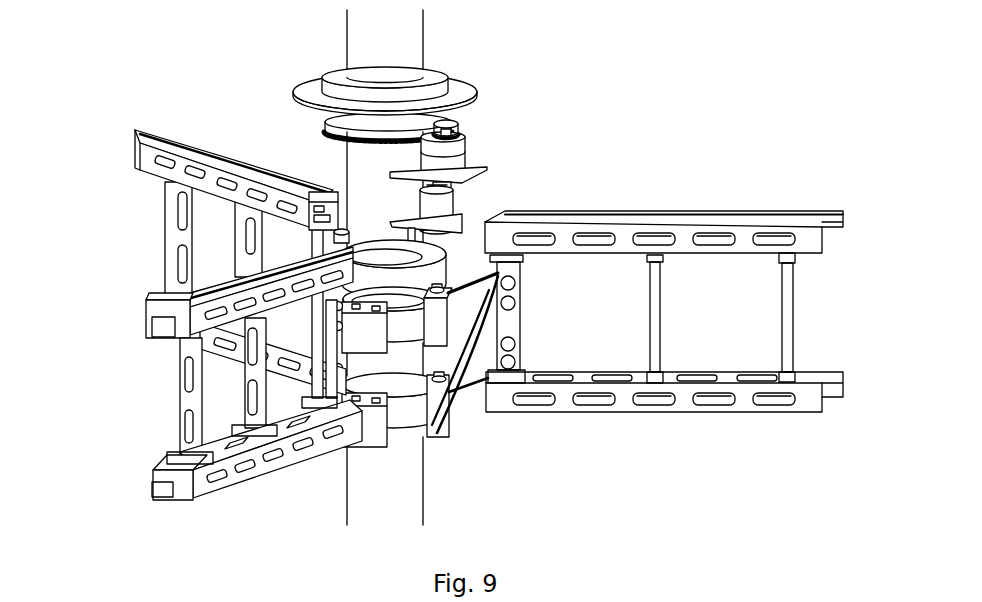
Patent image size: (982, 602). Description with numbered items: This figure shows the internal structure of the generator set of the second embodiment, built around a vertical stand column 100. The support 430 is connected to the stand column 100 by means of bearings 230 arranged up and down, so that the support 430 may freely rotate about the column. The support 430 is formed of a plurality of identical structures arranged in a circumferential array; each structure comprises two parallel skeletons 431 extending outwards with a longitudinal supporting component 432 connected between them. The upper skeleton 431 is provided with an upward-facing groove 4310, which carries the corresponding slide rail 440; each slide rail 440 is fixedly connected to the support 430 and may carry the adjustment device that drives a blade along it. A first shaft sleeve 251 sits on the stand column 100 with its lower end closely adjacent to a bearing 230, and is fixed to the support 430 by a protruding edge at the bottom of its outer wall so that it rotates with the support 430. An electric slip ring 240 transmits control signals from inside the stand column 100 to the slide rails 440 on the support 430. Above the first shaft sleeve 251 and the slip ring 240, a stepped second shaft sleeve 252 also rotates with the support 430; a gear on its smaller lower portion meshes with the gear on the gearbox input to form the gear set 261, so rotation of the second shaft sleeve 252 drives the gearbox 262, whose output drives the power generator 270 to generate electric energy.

The stand column 100 is at (392, 498).
The bearing 230 is at (418, 405).
The electric slip ring 240 is at (452, 302).
The first shaft sleeve 251 is at (487, 387).
The second shaft sleeve 252 is at (355, 95).
The gear set 261 is at (463, 109).
The gearbox 262 is at (460, 163).
The power generator 270 is at (440, 212).
The support 430 is at (253, 377).
The skeleton 431 is at (743, 245).
The longitudinal supporting component 432 is at (788, 332).
The slide rail 440 is at (162, 283).
The groove 4310 is at (330, 198).